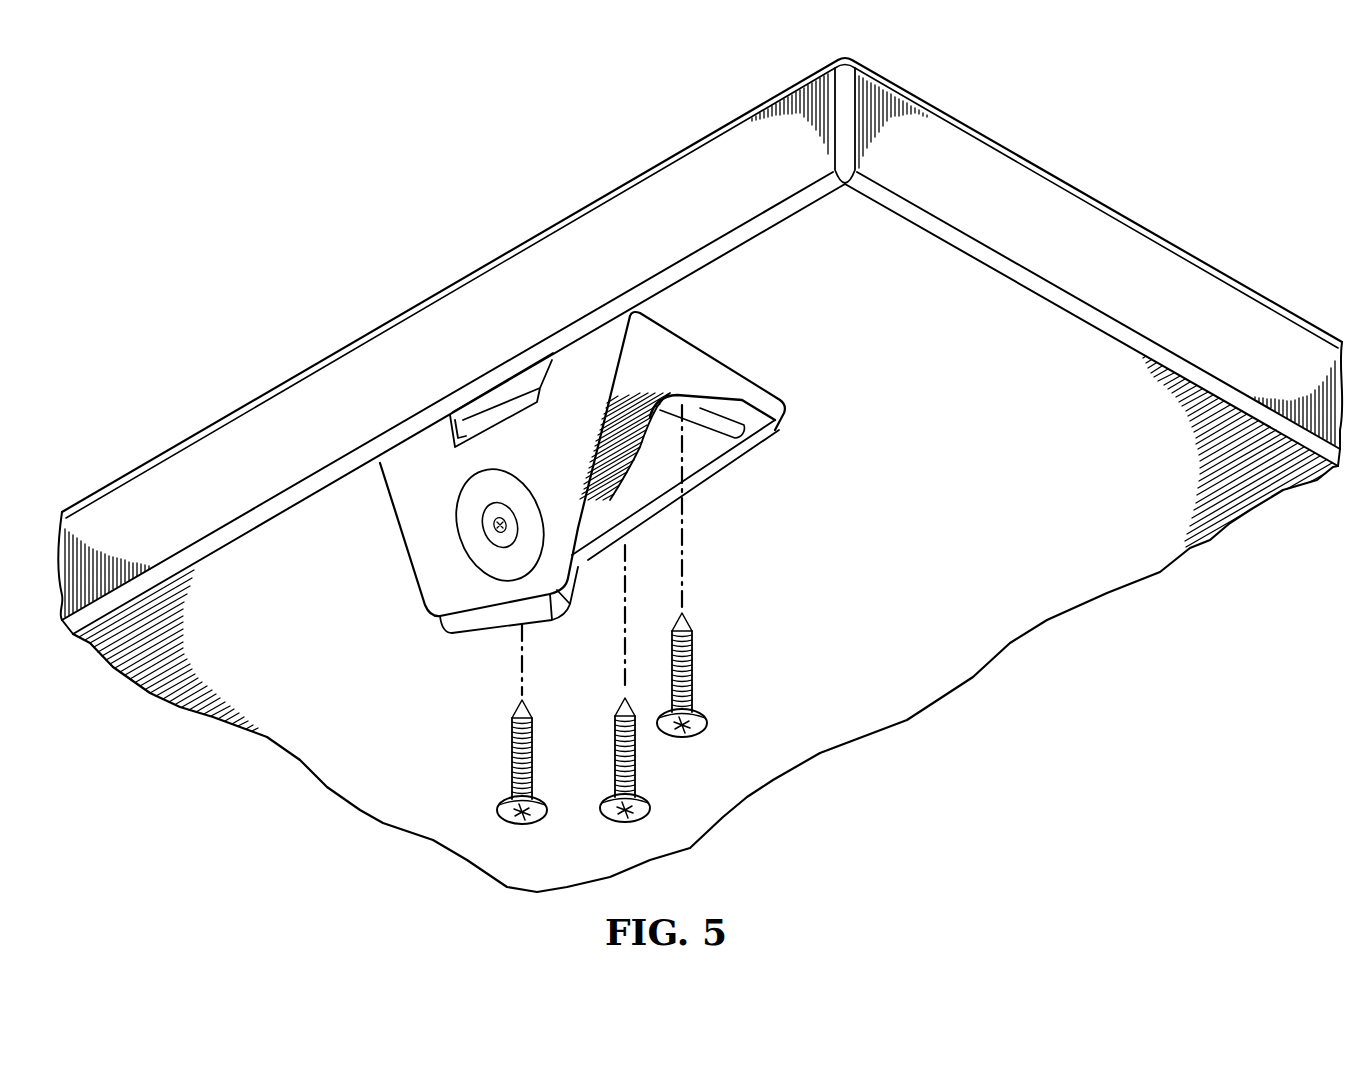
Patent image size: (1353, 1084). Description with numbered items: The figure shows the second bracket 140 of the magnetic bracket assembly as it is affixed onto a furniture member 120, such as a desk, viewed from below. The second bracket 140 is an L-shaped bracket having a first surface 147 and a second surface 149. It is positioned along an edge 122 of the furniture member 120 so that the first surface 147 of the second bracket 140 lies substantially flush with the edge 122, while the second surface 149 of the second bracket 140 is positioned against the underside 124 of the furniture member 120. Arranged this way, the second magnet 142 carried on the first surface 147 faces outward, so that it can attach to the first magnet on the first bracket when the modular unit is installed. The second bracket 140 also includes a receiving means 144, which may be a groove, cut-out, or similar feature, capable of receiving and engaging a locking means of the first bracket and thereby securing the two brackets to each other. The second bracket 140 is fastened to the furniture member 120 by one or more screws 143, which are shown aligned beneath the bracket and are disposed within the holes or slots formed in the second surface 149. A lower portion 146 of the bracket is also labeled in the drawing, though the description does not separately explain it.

The furniture member 120 is at (1018, 155).
The edge 122 is at (678, 171).
The underside 124 is at (967, 660).
The second bracket 140 is at (560, 484).
The second magnet 142 is at (465, 549).
The screws 143 is at (512, 760).
The receiving means 144 is at (500, 412).
The lower flange 146 is at (455, 632).
The first surface 147 is at (415, 512).
The second surface 149 is at (745, 388).